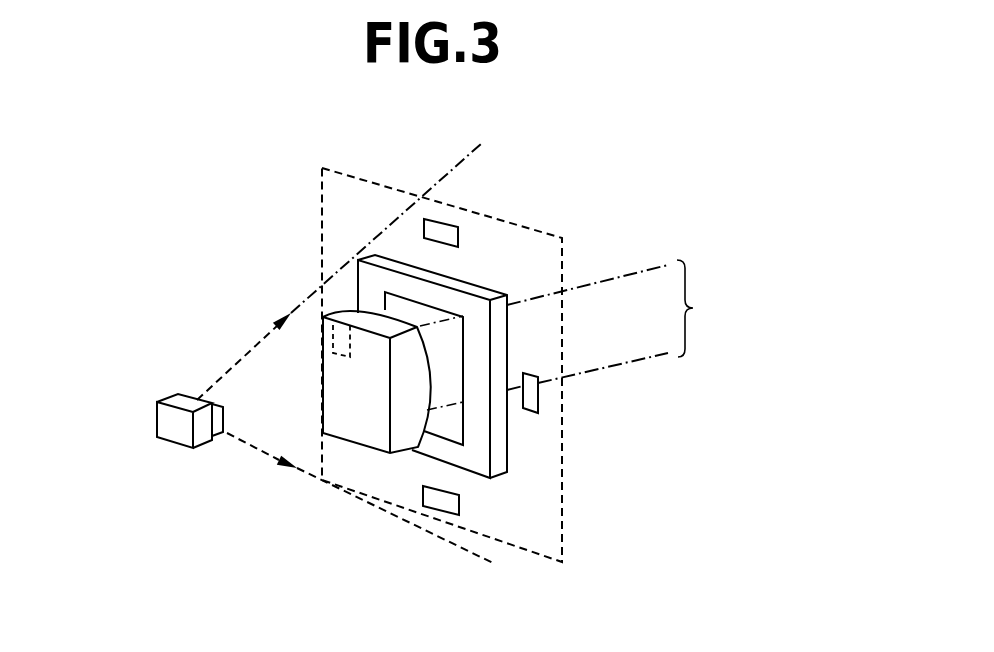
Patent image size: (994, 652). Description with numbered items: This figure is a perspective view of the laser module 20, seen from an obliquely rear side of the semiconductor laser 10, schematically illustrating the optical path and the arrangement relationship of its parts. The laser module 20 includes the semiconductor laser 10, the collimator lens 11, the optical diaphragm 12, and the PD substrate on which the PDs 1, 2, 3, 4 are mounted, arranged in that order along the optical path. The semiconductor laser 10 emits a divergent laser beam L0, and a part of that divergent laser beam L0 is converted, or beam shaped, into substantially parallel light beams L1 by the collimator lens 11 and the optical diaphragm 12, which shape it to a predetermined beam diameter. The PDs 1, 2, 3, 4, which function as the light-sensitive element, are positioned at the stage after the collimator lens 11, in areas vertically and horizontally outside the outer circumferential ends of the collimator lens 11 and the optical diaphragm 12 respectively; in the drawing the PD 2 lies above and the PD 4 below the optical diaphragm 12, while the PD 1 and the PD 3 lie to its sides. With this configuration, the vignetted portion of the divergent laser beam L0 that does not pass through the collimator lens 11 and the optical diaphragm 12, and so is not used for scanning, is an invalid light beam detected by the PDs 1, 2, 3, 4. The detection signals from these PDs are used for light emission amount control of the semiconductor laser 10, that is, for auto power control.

The PD 1 is at (340, 318).
The PD 2 is at (452, 225).
The PD 3 is at (532, 398).
The PD 4 is at (442, 502).
The semiconductor laser 10 is at (172, 397).
The collimator lens 11 is at (360, 420).
The optical diaphragm 12 is at (500, 456).
The laser module 20 is at (562, 507).
The divergent laser beam L0 is at (250, 474).
The substantially parallel light beams L1 is at (622, 325).